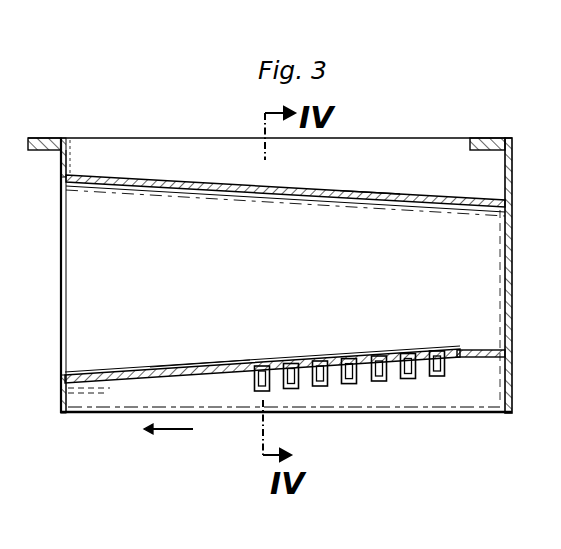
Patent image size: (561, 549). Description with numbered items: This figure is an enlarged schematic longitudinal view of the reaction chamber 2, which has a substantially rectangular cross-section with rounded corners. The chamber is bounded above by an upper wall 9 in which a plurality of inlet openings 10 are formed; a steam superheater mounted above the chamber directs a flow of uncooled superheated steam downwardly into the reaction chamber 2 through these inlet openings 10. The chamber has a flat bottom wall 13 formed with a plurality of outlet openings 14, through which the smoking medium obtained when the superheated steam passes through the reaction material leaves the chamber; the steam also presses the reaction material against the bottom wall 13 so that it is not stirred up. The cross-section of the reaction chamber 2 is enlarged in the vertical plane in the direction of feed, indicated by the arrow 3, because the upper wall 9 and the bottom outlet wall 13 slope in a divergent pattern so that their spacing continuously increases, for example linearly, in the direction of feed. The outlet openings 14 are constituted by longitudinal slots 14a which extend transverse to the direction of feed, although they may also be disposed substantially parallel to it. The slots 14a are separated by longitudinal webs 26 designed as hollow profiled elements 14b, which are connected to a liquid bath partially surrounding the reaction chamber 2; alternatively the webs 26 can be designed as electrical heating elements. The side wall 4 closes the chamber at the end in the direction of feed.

The reaction chamber 2 is at (110, 389).
The arrow 3 is at (183, 433).
The side wall 4 is at (502, 342).
The upper wall 9 is at (190, 178).
The inlet openings 10 is at (347, 191).
The bottom wall 13 is at (213, 377).
The outlet openings 14 is at (327, 364).
The longitudinal slots 14a is at (392, 366).
The hollow profiled elements 14b is at (350, 385).
The longitudinal webs 26 is at (260, 365).